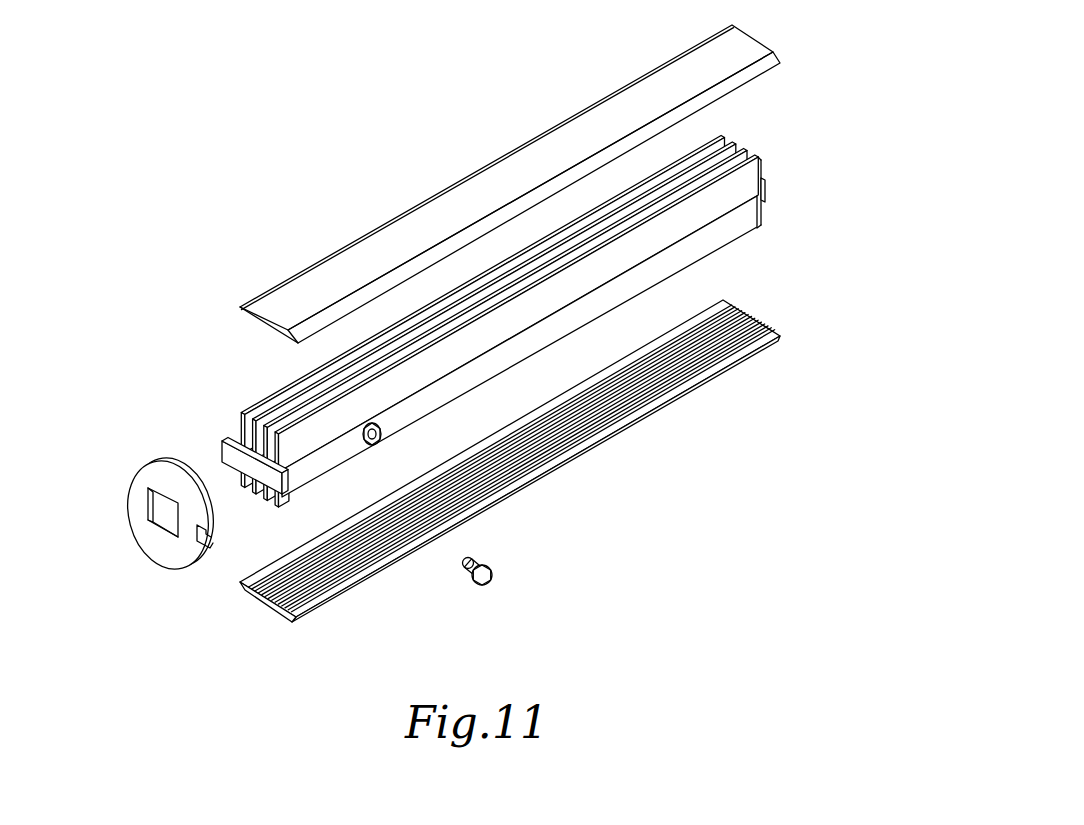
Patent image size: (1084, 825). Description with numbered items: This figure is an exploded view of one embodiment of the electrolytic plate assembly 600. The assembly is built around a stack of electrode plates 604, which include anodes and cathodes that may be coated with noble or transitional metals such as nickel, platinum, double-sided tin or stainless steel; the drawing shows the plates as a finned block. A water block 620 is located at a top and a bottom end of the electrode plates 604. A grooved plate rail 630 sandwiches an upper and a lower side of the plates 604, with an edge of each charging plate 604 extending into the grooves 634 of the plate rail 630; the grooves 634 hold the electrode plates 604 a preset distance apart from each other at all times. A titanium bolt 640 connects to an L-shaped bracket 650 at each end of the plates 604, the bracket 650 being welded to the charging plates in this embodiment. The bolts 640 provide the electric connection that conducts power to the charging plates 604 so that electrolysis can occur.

The electrolytic plate assembly 600 is at (366, 98).
The electrode plates 604 is at (745, 152).
The water block 620 is at (143, 483).
The grooved plate rail 630 is at (510, 323).
The grooves 634 is at (668, 385).
The titanium bolt 640 is at (492, 580).
The L-shaped bracket 650 is at (238, 458).